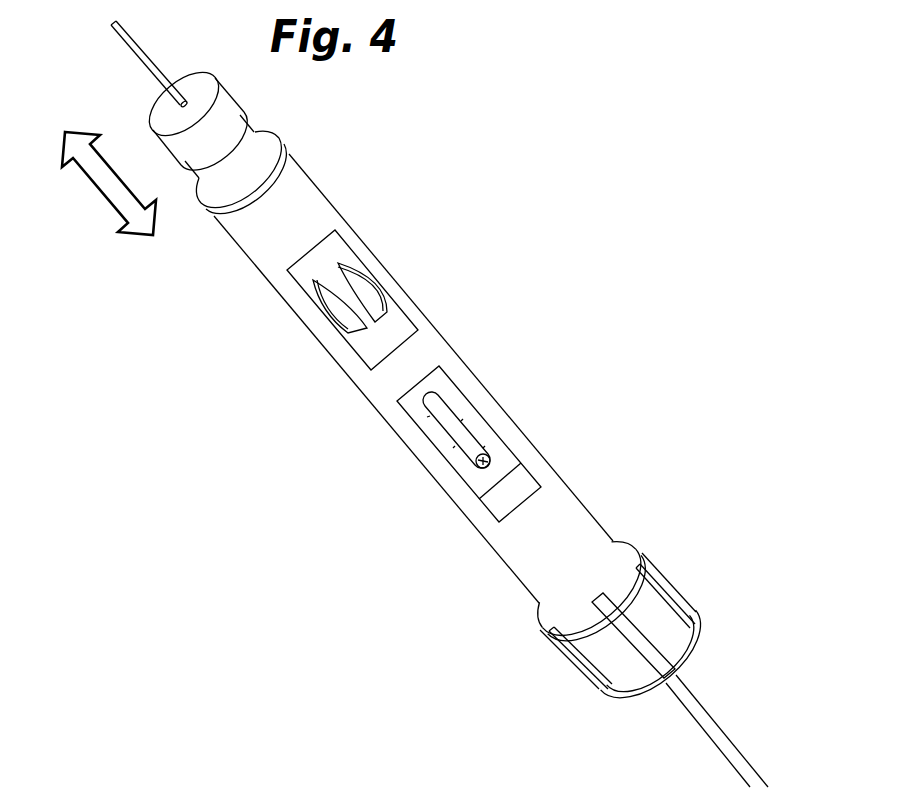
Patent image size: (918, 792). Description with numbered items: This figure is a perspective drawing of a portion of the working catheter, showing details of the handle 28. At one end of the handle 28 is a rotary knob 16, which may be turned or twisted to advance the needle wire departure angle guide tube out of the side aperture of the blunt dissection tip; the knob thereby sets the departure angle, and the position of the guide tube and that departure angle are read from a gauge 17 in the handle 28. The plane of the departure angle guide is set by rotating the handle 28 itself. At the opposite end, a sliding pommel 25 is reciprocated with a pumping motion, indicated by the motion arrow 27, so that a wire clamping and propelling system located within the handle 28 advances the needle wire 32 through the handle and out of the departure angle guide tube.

The needle wire 32 is at (145, 50).
The sliding pommel 25 is at (236, 100).
The handle 28 is at (423, 258).
The gauge 17 is at (470, 395).
The rotary knob 16 is at (682, 598).
The motion arrow 27 is at (140, 228).